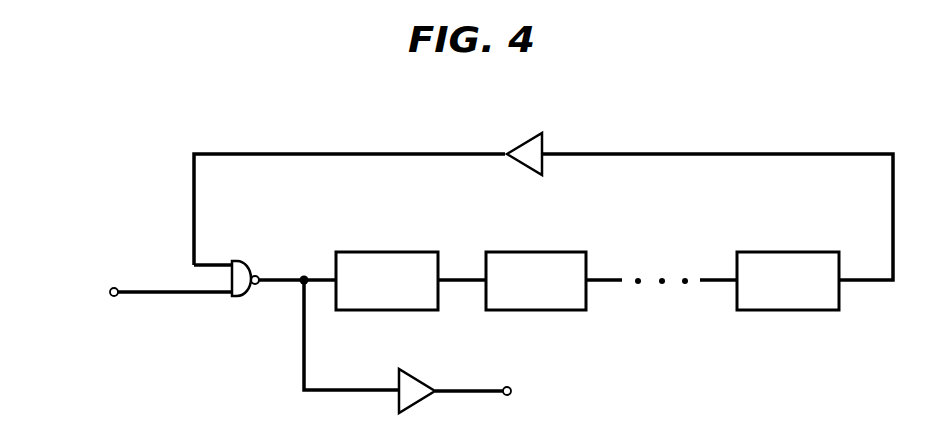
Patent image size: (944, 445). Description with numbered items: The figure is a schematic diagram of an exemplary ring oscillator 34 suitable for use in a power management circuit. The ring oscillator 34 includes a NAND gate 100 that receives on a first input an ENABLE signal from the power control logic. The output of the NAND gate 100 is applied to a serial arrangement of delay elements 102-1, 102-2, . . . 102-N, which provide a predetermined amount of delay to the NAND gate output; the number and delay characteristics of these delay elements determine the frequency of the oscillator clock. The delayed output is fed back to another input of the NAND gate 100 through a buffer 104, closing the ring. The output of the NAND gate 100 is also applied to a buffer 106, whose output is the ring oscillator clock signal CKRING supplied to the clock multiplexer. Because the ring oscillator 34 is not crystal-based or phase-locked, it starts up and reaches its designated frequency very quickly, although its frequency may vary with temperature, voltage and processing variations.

The ring oscillator 34 is at (228, 95).
The NAND gate 100 is at (247, 297).
The delay element 102-1 is at (386, 252).
The delay element 102-2 is at (534, 252).
The delay element 102-N is at (768, 252).
The buffer 104 is at (510, 157).
The buffer 106 is at (423, 381).